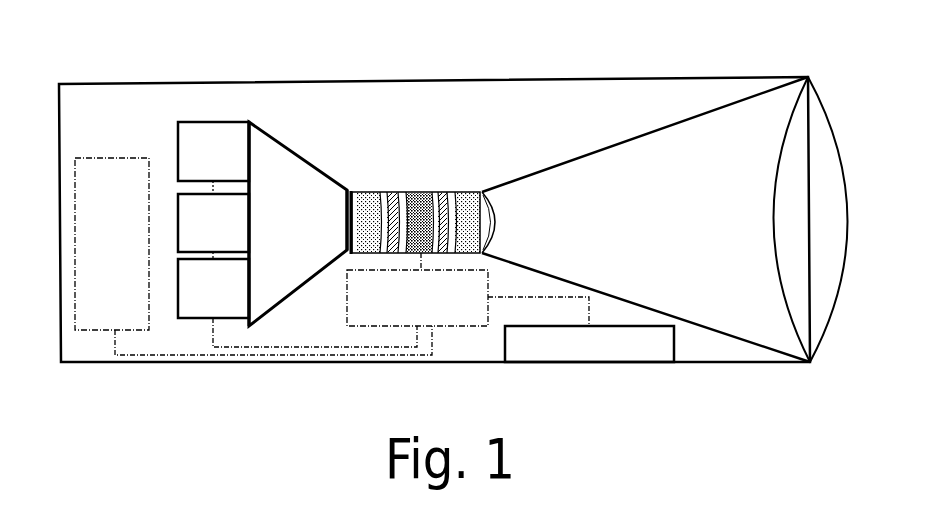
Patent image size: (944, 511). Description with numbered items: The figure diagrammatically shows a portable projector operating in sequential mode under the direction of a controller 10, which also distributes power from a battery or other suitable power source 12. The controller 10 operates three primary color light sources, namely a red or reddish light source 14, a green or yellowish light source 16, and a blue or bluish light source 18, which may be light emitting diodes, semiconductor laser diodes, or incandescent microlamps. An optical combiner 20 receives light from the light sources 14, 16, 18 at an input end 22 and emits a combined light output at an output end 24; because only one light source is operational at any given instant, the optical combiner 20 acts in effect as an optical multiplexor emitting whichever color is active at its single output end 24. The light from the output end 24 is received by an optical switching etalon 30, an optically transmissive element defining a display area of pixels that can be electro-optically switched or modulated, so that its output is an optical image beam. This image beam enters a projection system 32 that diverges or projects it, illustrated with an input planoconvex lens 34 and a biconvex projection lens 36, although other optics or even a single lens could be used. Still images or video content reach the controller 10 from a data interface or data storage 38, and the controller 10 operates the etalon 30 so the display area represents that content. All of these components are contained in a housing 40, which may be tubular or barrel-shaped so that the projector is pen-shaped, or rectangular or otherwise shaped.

The controller 10 is at (445, 327).
The power source 12 is at (128, 295).
The red light source 14 is at (213, 121).
The green light source 16 is at (176, 204).
The blue light source 18 is at (197, 319).
The optical combiner 20 is at (280, 236).
The input end 22 is at (253, 260).
The output end 24 is at (340, 215).
The optical switching etalon 30 is at (432, 180).
The projection system 32 is at (660, 234).
The input planoconvex lens 34 is at (490, 203).
The biconvex projection lens 36 is at (830, 125).
The data interface or data storage 38 is at (677, 345).
The housing 40 is at (383, 80).